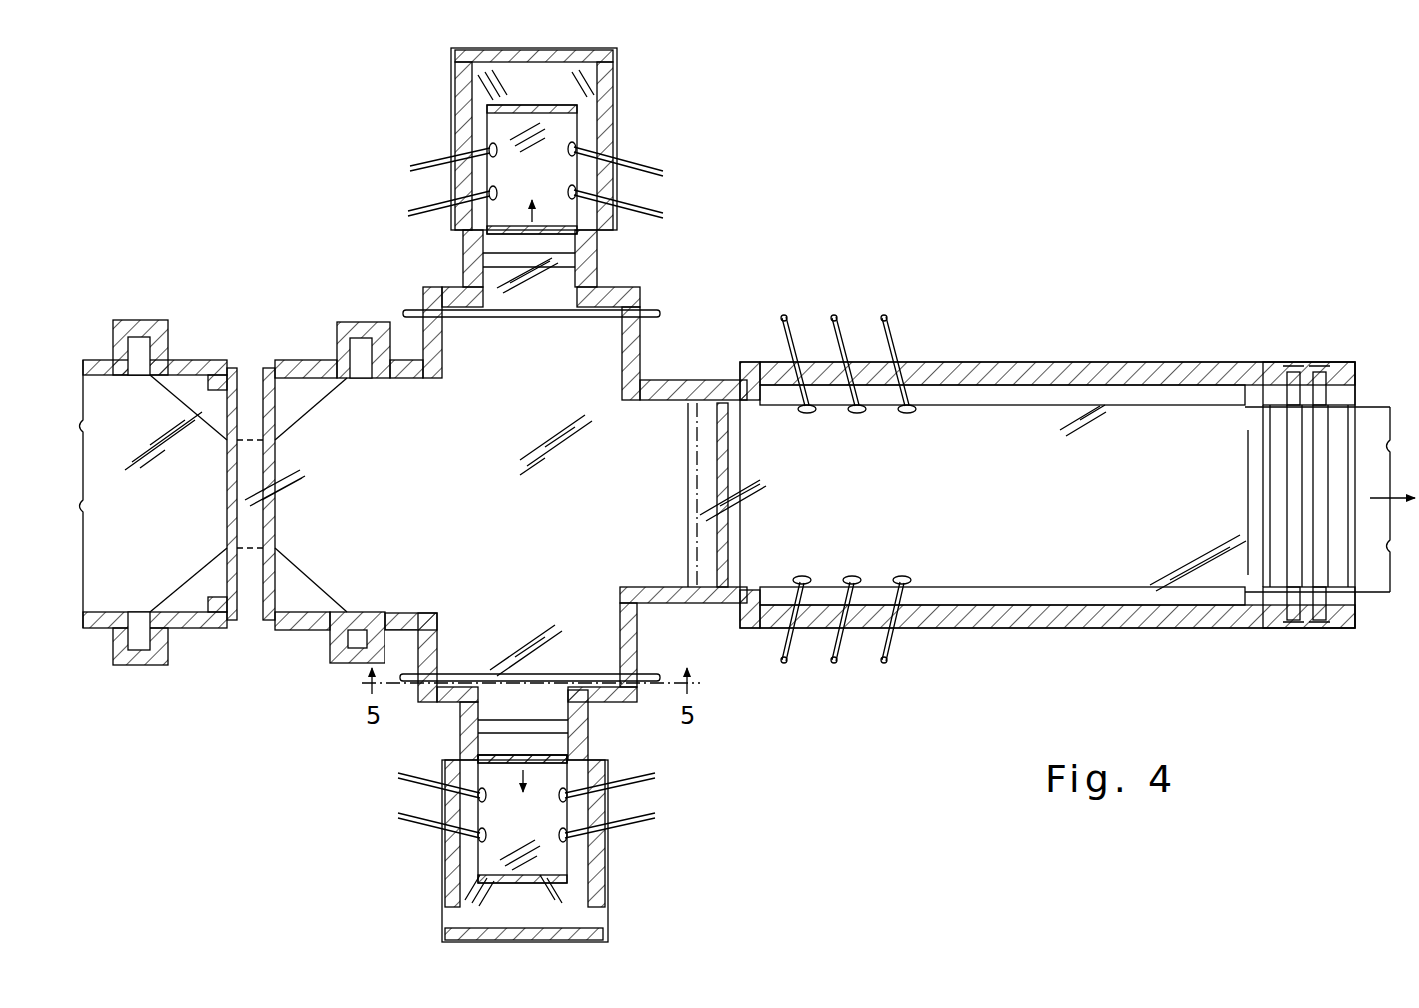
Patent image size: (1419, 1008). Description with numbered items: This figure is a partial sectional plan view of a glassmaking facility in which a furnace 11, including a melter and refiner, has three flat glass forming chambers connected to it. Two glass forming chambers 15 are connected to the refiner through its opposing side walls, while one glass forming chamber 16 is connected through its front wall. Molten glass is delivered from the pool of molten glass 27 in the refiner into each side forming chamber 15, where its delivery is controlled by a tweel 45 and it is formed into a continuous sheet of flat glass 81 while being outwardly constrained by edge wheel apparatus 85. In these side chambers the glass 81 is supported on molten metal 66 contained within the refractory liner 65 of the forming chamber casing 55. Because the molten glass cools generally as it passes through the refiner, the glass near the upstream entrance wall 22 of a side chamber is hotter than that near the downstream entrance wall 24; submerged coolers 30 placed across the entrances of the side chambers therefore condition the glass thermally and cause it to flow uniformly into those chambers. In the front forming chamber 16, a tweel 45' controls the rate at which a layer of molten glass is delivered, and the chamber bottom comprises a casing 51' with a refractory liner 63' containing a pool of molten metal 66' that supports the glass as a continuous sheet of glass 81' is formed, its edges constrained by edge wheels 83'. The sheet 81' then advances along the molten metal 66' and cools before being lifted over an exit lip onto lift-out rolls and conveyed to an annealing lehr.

The furnace 11 is at (330, 315).
The pool of molten glass 27 is at (515, 506).
The upstream entrance wall 22 is at (417, 657).
The downstream entrance wall 24 is at (637, 624).
The submerged coolers 30 is at (655, 312).
The glass forming chambers 15 is at (410, 125).
The refractory liner 65 is at (514, 50).
The forming chamber casing 55 is at (570, 52).
The molten metal 66 is at (533, 490).
The continuous sheet of flat glass 81 is at (527, 494).
The edge wheel apparatus 85 is at (690, 798).
The tweel 45 is at (559, 741).
The tweel 45' is at (744, 495).
The glass forming chamber 16 is at (1153, 350).
The casing 51' is at (1047, 363).
The refractory liner 63' is at (1047, 623).
The pool of molten metal 66' is at (1002, 520).
The continuous sheet of glass 81' is at (1207, 498).
The edge wheels 83' is at (848, 486).